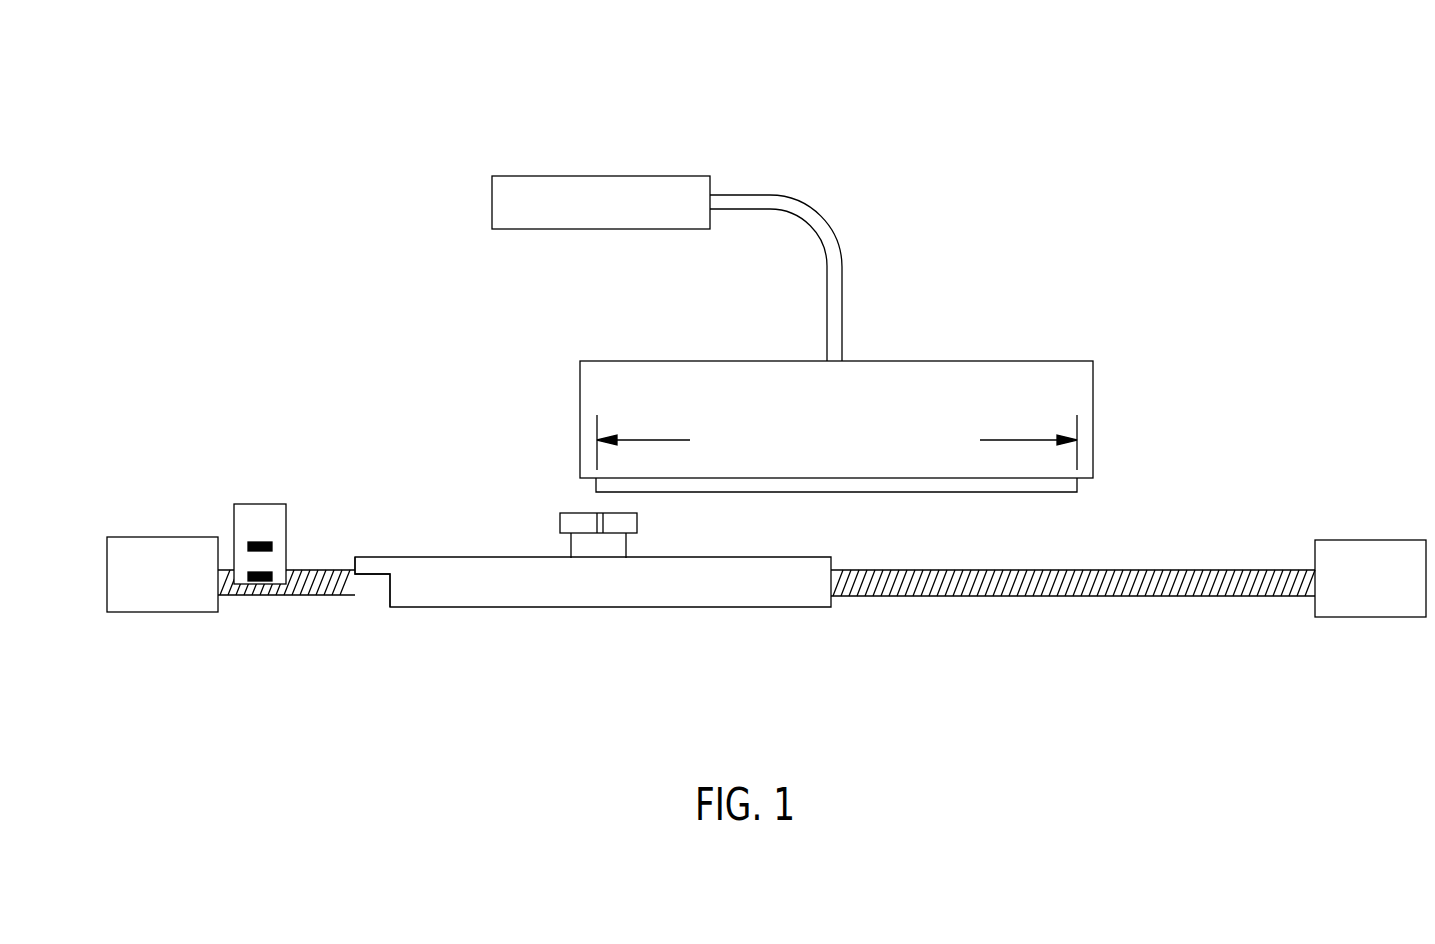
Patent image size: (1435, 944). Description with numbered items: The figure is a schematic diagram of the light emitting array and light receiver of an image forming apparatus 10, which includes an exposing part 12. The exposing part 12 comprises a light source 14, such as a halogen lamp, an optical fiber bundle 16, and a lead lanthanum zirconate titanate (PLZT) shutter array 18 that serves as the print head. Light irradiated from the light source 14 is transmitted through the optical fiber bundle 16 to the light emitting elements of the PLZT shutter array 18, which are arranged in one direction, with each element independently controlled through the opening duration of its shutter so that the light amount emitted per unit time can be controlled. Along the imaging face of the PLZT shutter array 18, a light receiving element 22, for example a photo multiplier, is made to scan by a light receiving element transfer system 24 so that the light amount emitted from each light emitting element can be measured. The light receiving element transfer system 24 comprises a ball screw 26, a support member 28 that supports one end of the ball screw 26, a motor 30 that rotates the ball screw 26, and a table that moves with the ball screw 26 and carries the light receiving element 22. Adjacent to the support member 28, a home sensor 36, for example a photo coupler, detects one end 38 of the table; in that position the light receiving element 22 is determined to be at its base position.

The image forming apparatus 10 is at (318, 110).
The exposing part 12 is at (850, 105).
The light source 14 is at (613, 176).
The optical fiber bundle 16 is at (835, 235).
The PLZT shutter array 18 is at (942, 361).
The light receiving element 22 is at (628, 545).
The light receiving element transfer system 24 is at (593, 640).
The ball screw 26 is at (952, 597).
The support member 28 is at (158, 613).
The motor 30 is at (1377, 617).
The home sensor 36 is at (286, 520).
The one end of the table 38 is at (390, 557).